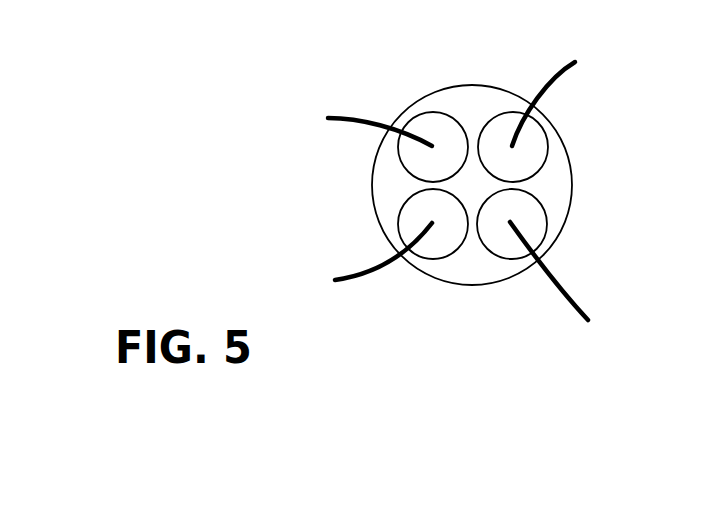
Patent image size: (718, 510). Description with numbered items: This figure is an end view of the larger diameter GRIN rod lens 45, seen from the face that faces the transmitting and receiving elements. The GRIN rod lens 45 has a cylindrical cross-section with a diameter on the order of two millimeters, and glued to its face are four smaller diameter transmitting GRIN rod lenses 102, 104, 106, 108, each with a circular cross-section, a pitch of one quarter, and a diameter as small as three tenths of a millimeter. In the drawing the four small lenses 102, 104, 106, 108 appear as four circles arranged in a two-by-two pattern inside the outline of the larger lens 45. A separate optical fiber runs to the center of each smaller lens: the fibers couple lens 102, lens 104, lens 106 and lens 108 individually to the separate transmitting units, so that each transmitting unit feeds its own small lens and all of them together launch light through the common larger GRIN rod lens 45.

The GRIN rod lens 45 is at (573, 173).
The smaller diameter transmitting GRIN rod lens 102 is at (427, 117).
The smaller diameter transmitting GRIN rod lens 104 is at (500, 125).
The smaller diameter transmitting GRIN rod lens 106 is at (407, 217).
The smaller diameter transmitting GRIN rod lens 108 is at (527, 213).